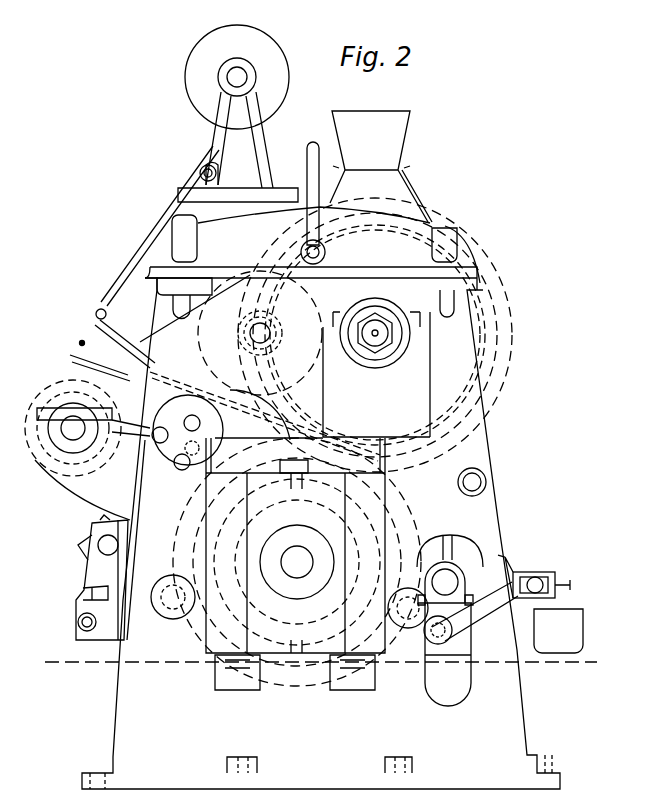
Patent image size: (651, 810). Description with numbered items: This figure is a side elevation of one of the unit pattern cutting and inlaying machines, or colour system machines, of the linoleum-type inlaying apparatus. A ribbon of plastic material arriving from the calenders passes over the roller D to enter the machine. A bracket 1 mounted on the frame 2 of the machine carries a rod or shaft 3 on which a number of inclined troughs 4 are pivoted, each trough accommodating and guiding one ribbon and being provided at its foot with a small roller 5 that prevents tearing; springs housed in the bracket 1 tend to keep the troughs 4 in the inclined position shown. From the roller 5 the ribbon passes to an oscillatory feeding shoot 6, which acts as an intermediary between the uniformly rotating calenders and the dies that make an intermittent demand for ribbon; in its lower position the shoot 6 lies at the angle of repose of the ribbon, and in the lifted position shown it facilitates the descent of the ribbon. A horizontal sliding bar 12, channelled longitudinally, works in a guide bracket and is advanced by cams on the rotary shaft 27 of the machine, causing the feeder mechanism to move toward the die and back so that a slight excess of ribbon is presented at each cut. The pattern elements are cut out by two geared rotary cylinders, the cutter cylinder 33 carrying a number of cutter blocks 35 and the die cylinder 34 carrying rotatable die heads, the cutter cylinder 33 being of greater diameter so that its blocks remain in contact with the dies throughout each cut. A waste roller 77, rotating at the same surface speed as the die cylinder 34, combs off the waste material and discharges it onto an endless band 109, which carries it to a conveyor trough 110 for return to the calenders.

The roller D is at (185, 62).
The bracket 1 is at (220, 180).
The frame 2 is at (162, 310).
The rod or shaft 3 is at (198, 172).
The inclined trough 4 is at (156, 224).
The roller 5 is at (98, 312).
The feeding shoot 6 is at (80, 342).
The sliding bar 12 is at (150, 428).
The rotary shaft 27 is at (62, 458).
The cutter cylinder 33 is at (498, 318).
The die cylinder 34 is at (285, 695).
The cutter block 35 is at (272, 440).
The waste roller 77 is at (418, 660).
The endless band 109 is at (514, 565).
The conveyor trough 110 is at (583, 628).